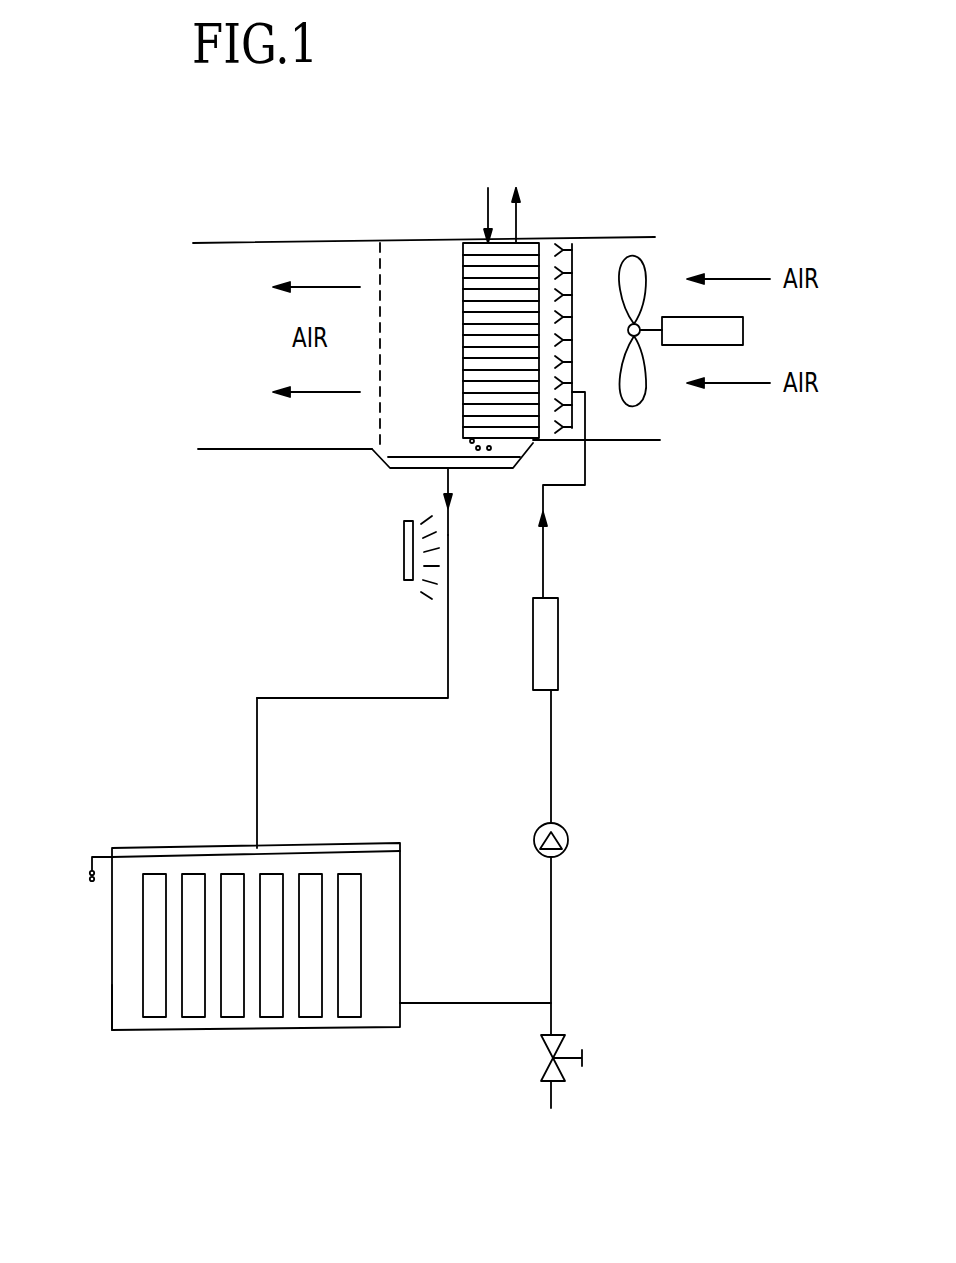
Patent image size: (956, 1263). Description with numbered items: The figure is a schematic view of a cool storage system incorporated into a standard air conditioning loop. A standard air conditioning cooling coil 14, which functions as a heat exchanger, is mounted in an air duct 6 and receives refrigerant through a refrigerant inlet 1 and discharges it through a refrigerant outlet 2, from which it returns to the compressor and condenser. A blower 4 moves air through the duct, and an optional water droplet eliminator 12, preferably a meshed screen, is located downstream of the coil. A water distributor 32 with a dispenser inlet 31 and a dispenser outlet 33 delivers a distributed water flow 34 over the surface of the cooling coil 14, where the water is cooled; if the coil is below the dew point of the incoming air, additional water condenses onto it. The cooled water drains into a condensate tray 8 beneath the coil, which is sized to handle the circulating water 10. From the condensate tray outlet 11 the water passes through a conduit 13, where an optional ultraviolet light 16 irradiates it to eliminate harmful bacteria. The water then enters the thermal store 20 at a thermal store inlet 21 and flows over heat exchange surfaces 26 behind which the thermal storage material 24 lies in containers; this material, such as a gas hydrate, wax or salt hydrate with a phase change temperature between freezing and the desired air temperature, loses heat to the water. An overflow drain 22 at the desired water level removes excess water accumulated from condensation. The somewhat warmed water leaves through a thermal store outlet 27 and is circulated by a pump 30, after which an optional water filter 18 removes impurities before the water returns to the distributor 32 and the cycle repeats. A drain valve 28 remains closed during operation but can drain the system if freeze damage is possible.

The refrigerant inlet 1 is at (488, 203).
The refrigerant outlet 2 is at (518, 216).
The blower 4 is at (640, 393).
The air duct 6 is at (262, 449).
The condensate tray 8 is at (483, 468).
The water 10 is at (413, 457).
The condensate tray outlet 11 is at (436, 477).
The water droplet eliminator 12 is at (381, 270).
The conduit 13 is at (448, 628).
The cooling coil 14 is at (463, 363).
The ultraviolet light 16 is at (404, 550).
The water filter 18 is at (558, 645).
The thermal store 20 is at (352, 843).
The thermal store inlet 21 is at (257, 848).
The overflow drain 22 is at (92, 858).
The thermal storage material 24 is at (148, 972).
The heat exchange surfaces 26 is at (143, 998).
The thermal store outlet 27 is at (402, 1003).
The drain valve 28 is at (549, 1057).
The pump 30 is at (568, 824).
The dispenser inlet 31 is at (582, 392).
The water distributor 32 is at (570, 293).
The dispenser outlet 33 is at (574, 278).
The distributed water flow 34 is at (556, 248).